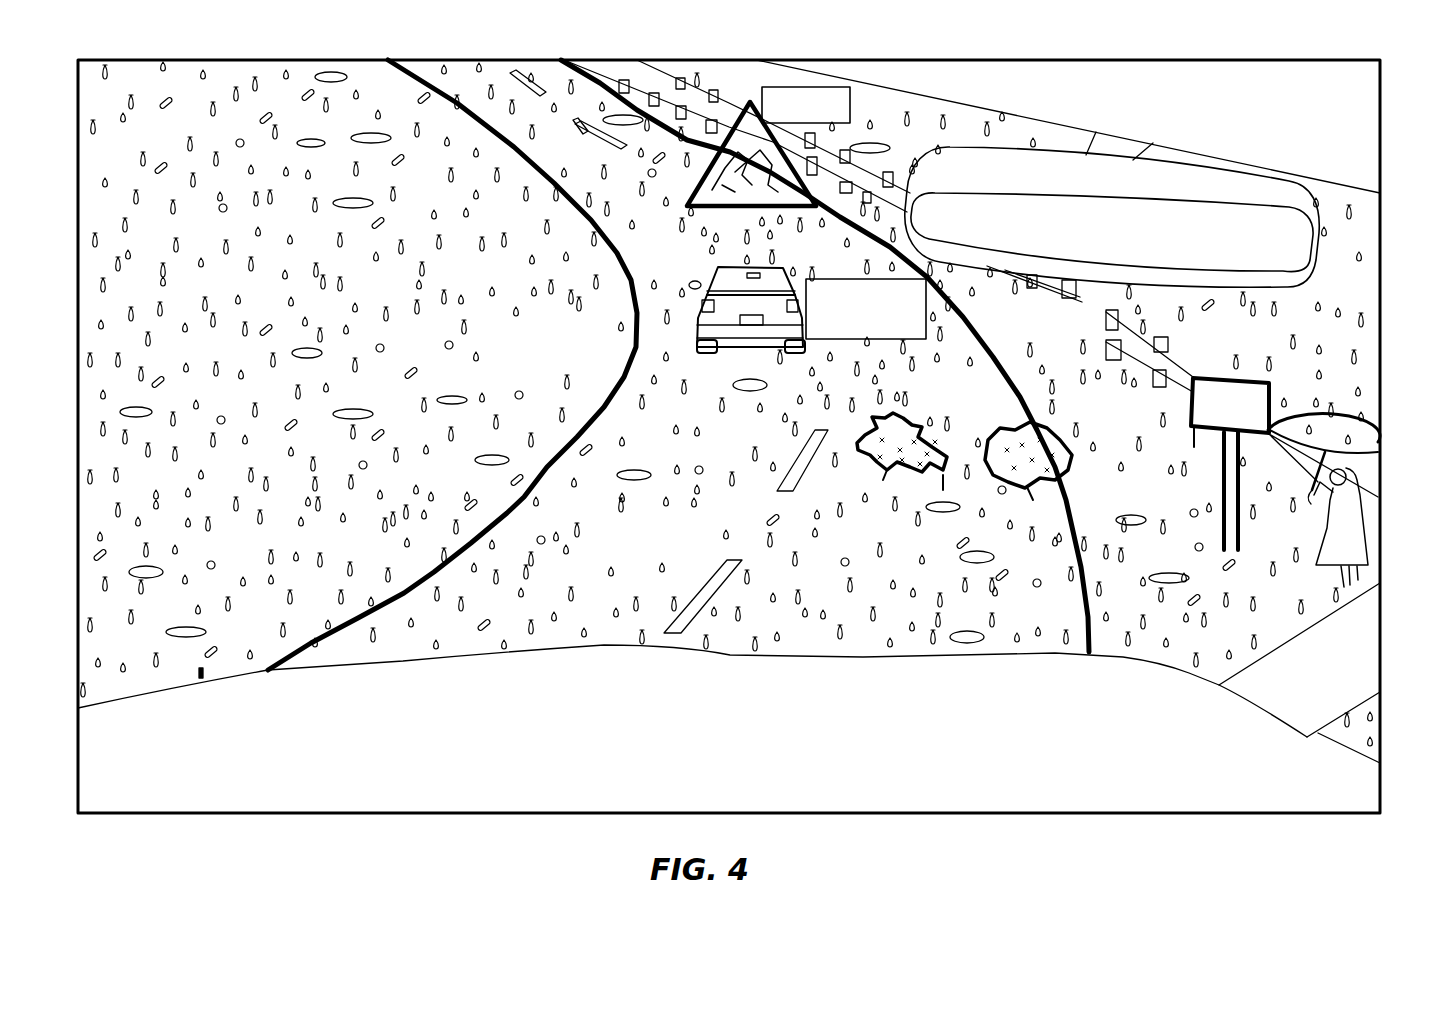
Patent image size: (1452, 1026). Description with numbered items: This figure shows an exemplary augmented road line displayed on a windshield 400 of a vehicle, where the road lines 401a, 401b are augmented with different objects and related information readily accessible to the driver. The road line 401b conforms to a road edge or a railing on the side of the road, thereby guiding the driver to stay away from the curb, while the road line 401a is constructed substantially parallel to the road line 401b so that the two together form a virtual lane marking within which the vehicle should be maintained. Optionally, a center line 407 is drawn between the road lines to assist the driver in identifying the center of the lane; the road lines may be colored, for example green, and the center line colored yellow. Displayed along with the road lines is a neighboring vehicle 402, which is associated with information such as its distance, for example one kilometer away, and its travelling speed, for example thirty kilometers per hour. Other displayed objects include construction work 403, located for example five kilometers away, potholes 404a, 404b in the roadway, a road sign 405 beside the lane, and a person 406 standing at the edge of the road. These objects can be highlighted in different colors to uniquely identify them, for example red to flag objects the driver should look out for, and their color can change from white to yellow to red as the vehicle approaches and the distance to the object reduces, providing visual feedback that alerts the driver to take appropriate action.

The windshield 400 is at (1237, 161).
The road line 401a is at (610, 390).
The road line 401b is at (1037, 332).
The neighboring vehicle 402 is at (698, 314).
The construction work 403 is at (745, 99).
The pothole 404a is at (918, 427).
The pothole 404b is at (1049, 433).
The road sign 405 is at (1209, 402).
The person 406 is at (1365, 514).
The center line 407 is at (699, 590).